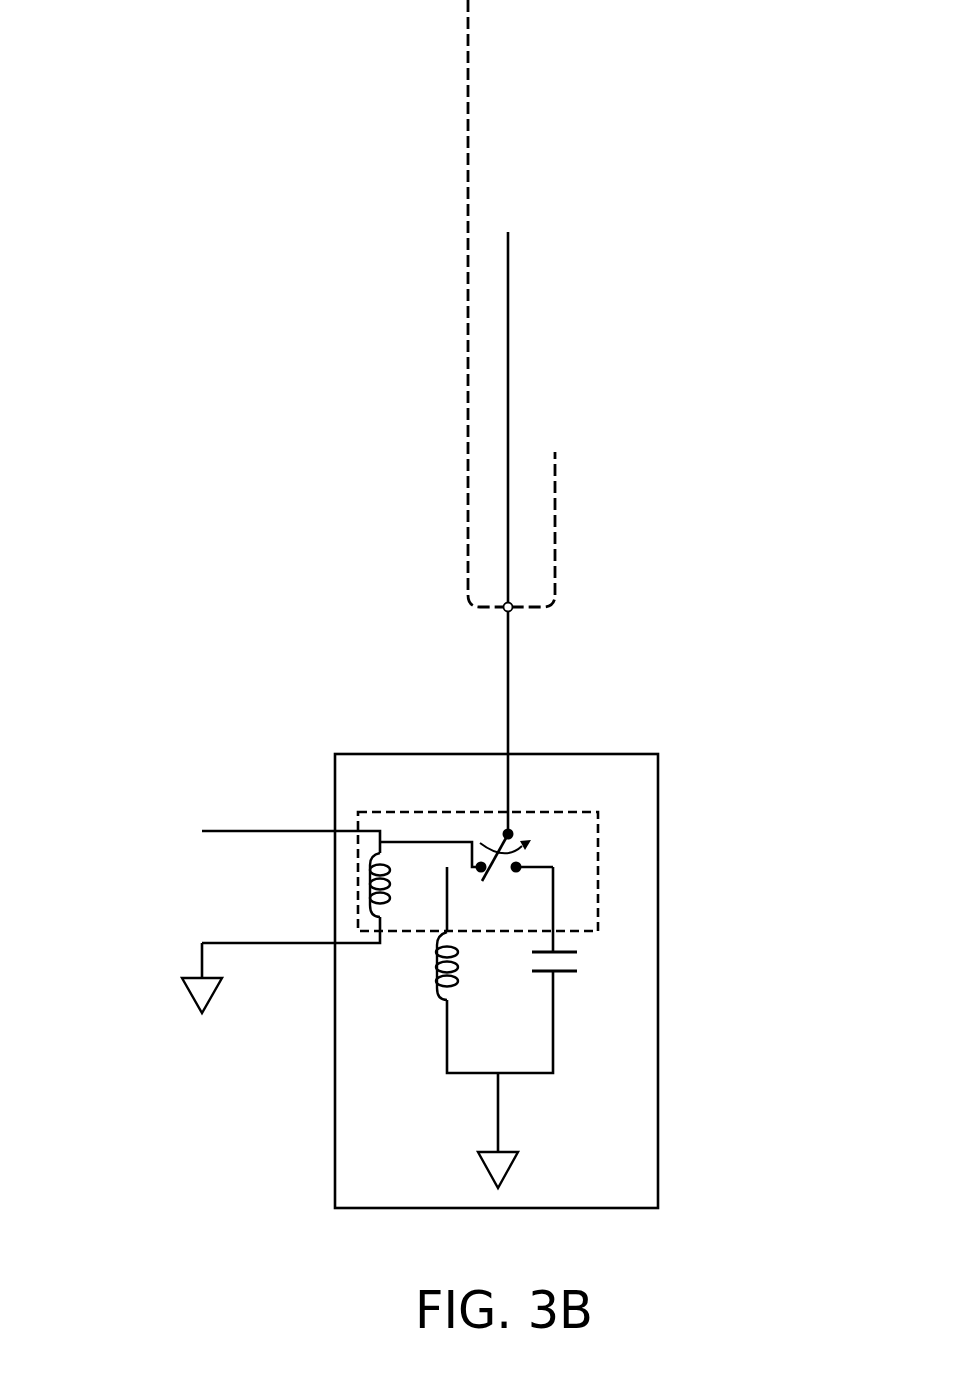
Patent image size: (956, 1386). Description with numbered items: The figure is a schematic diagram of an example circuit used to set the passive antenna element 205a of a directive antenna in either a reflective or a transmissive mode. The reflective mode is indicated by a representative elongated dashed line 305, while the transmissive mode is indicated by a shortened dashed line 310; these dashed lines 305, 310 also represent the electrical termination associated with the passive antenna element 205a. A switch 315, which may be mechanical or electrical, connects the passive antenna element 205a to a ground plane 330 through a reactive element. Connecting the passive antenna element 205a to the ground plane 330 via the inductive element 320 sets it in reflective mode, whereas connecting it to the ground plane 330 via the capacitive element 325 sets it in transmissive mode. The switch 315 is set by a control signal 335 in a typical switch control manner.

The elongated dashed line 305 is at (468, 82).
The shortened dashed line 310 is at (555, 507).
The passive antenna element 205a is at (509, 372).
The switch 315 is at (556, 810).
The inductive element 320 is at (435, 993).
The capacitive element 325 is at (577, 971).
The ground plane 330 is at (188, 993).
The control signal 335 is at (147, 808).